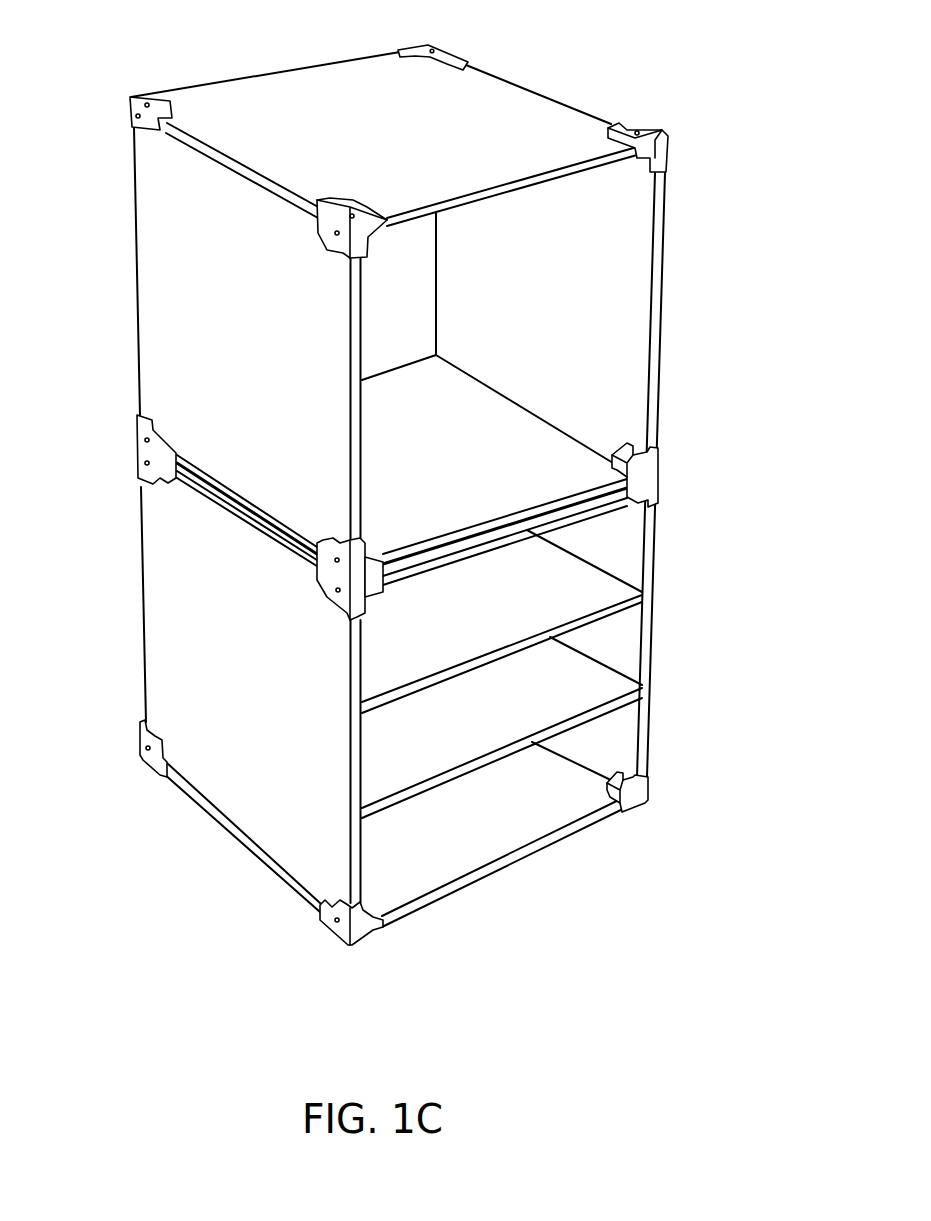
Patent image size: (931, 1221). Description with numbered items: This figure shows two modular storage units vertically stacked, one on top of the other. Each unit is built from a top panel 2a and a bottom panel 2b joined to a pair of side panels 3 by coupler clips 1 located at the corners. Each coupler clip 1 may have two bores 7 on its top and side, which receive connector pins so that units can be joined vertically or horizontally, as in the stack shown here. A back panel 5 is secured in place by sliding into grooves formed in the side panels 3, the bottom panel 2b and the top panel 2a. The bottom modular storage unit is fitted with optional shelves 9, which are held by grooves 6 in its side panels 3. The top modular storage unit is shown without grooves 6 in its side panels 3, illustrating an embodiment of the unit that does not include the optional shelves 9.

The coupler clip 1 is at (437, 538).
The top panel 2a is at (283, 103).
The bottom panel 2b is at (492, 830).
The side panel 3 is at (162, 236).
The back panel 5 is at (403, 272).
The groove 6 is at (243, 338).
The bore 7 is at (638, 127).
The shelf 9 is at (573, 580).